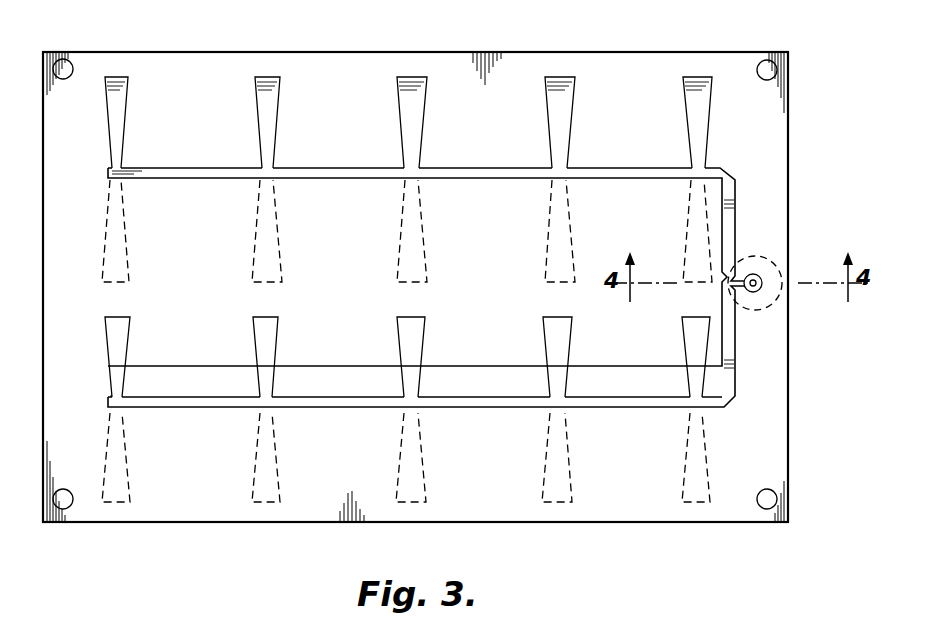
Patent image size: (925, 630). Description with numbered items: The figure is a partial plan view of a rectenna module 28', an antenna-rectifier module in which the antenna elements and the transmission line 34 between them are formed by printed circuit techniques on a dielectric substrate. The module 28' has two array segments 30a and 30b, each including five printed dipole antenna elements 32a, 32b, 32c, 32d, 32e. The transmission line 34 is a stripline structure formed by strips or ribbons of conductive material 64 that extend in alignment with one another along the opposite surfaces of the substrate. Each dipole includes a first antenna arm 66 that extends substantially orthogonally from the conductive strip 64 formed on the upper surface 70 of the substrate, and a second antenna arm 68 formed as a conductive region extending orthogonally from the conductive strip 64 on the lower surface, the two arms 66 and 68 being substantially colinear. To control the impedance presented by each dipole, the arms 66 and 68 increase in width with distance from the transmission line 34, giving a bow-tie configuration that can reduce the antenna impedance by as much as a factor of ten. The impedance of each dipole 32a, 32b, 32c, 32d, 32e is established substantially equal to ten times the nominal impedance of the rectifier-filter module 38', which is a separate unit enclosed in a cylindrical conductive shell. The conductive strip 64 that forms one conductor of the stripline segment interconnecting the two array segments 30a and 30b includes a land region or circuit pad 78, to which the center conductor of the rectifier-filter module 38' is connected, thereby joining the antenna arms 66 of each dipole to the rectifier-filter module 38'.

The rectenna module 28' is at (406, 31).
The array segment 30a is at (440, 279).
The array segment 30b is at (108, 352).
The dipole antenna element 32a is at (128, 241).
The dipole antenna element 32b is at (281, 150).
The dipole antenna element 32c is at (421, 152).
The dipole antenna element 32d is at (569, 148).
The dipole antenna element 32e is at (702, 138).
The transmission line 34 is at (230, 180).
The rectifier-filter module 38' is at (784, 243).
The conductive strip 64 is at (483, 178).
The first antenna arm 66 is at (129, 97).
The second antenna arm 68 is at (412, 268).
The upper surface 70 is at (197, 488).
The circuit pad 78 is at (758, 292).